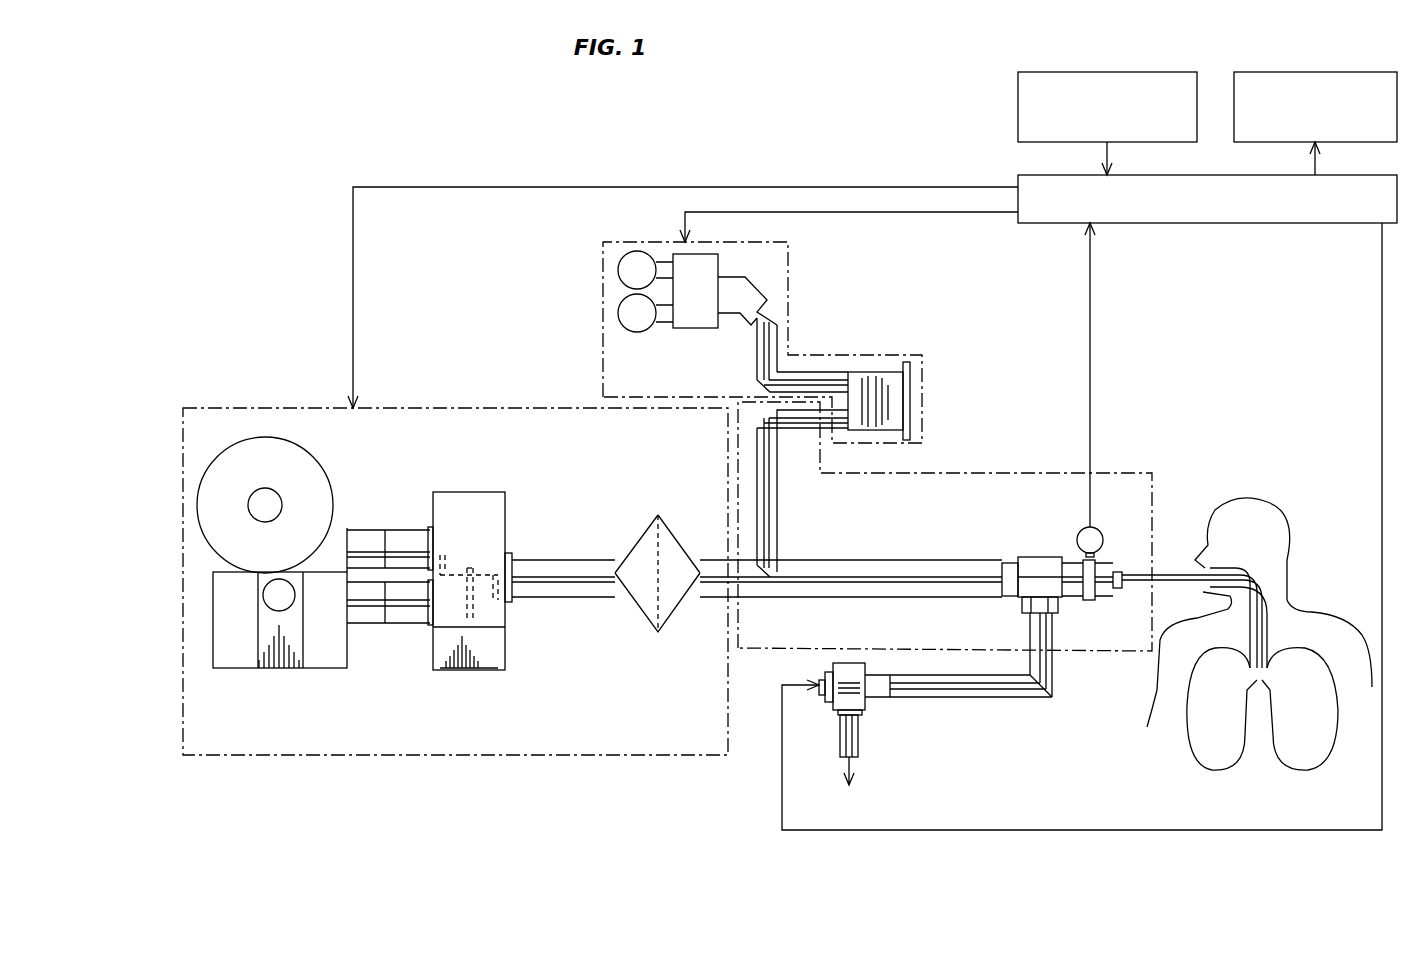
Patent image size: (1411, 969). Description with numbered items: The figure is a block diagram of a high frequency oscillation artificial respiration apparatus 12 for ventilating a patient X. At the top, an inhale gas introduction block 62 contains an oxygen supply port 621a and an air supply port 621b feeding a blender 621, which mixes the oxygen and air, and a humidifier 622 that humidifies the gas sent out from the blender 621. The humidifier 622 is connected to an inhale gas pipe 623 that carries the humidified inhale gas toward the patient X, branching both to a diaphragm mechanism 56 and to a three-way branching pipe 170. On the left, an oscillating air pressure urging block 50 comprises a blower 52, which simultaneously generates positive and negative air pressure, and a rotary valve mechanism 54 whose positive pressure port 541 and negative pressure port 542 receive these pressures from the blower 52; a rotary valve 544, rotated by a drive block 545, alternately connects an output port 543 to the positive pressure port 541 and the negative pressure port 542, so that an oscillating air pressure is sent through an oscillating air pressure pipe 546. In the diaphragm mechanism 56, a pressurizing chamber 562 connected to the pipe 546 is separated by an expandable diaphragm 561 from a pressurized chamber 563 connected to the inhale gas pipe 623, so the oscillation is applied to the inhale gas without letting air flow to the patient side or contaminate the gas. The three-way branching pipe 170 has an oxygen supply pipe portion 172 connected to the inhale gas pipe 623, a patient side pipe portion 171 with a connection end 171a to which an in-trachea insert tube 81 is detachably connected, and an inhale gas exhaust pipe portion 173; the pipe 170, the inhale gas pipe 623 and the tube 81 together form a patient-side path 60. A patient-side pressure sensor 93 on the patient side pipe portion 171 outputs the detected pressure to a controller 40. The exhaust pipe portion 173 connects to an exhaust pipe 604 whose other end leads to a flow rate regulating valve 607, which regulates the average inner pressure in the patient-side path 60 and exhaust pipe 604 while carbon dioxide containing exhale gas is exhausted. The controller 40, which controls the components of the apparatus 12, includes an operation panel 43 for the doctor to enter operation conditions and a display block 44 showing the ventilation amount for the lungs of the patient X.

The HFO artificial respiration apparatus 12 is at (280, 243).
The controller 40 is at (1237, 225).
The operation panel 43 is at (1150, 72).
The display block 44 is at (1348, 72).
The oscillating air pressure urging block 50 is at (252, 408).
The blower 52 is at (320, 468).
The rotary valve mechanism 54 is at (462, 492).
The positive pressure port 541 is at (416, 528).
The negative pressure port 542 is at (430, 627).
The output port 543 is at (515, 553).
The rotary valve 544 is at (486, 585).
The drive block 545 is at (458, 670).
The oscillating air pressure pipe 546 is at (576, 598).
The diaphragm mechanism 56 is at (560, 472).
The diaphragm 561 is at (648, 532).
The pressurizing chamber 562 is at (637, 555).
The pressurized chamber 563 is at (673, 537).
The inhale gas introduction block 62 is at (602, 352).
The blender 621 is at (700, 330).
The oxygen supply port 621a is at (637, 250).
The air supply port 621b is at (637, 332).
The humidifier 622 is at (857, 372).
The inhale gas pipe 623 is at (777, 518).
The patient-side path 60 is at (997, 472).
The three-way branching pipe 170 is at (1038, 560).
The patient side pipe portion 171 is at (1107, 590).
The connection end 171a is at (1122, 575).
The oxygen supply pipe portion 172 is at (1010, 568).
The inhale gas exhaust pipe portion 173 is at (1022, 608).
The patient-side pressure sensor 93 is at (1082, 530).
The in-trachea insert tube 81 is at (1168, 575).
The patient X is at (1278, 505).
The exhaust pipe 604 is at (1016, 697).
The flow rate regulating valve 607 is at (865, 705).